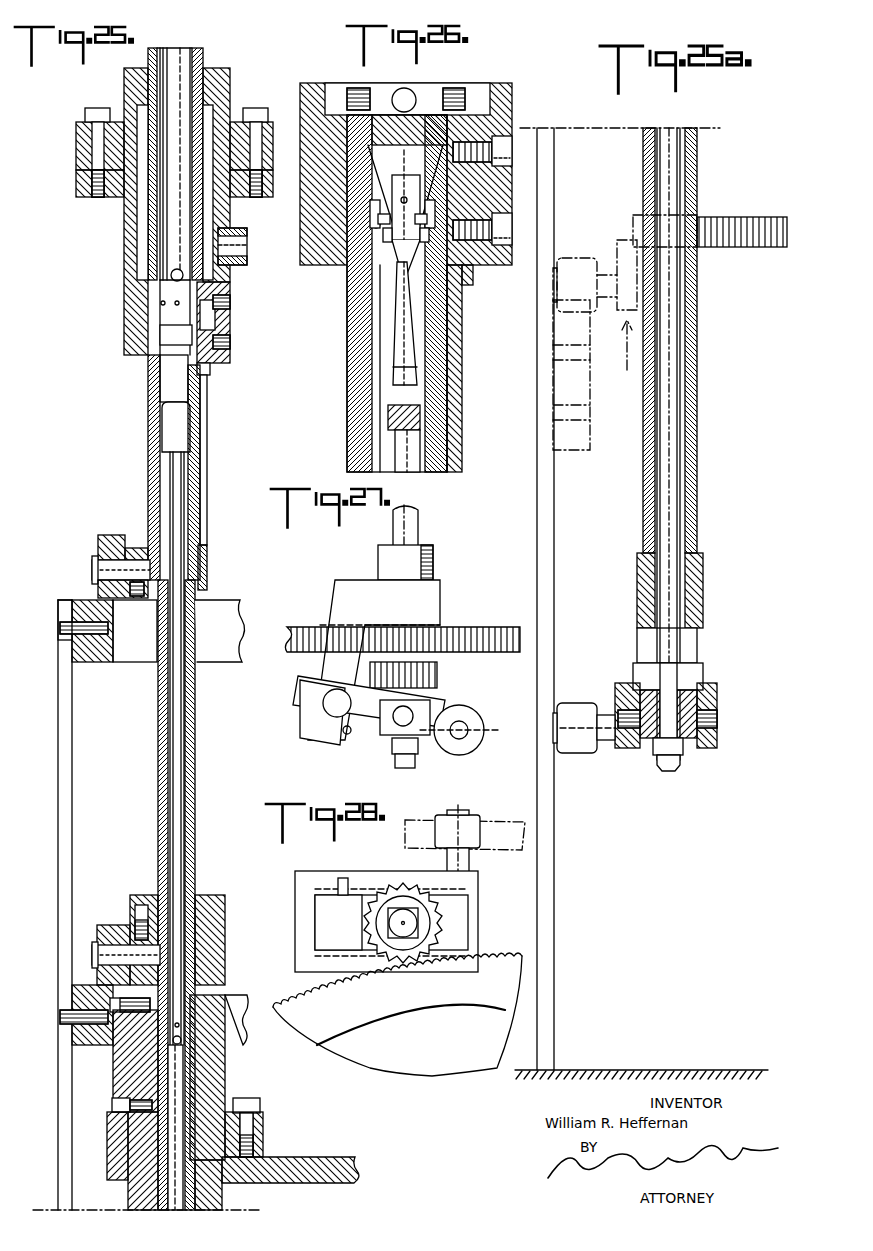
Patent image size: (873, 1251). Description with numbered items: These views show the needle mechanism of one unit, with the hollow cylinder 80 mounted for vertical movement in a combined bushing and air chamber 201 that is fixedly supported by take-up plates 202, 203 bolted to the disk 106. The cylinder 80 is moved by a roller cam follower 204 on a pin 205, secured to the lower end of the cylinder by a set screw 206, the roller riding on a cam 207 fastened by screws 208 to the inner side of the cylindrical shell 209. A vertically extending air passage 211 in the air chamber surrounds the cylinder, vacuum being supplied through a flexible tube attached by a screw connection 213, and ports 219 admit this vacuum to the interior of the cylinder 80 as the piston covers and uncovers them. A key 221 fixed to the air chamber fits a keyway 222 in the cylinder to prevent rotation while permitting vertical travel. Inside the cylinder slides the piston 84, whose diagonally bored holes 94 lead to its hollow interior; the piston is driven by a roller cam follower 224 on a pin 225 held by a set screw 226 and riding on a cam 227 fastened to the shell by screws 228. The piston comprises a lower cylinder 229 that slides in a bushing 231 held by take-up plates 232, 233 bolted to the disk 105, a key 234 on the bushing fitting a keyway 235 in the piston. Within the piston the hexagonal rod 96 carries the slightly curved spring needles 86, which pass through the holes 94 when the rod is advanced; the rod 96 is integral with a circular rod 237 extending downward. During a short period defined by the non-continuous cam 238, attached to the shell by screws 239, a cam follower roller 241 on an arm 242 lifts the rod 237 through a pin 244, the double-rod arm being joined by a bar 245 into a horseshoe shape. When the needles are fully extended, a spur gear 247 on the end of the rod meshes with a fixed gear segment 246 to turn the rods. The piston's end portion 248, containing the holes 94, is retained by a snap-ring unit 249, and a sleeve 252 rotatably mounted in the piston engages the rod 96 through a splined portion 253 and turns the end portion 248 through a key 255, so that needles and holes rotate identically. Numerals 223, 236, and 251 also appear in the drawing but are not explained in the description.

In FIG. 25, the hollow cylinder 80 is at (205, 56).
In FIG. 25, the piston 84 is at (171, 372).
In FIG. 26, the piston 84 is at (428, 119).
In FIG. 27, the piston 84 is at (385, 557).
In FIG. 26, the spring needles 86 is at (415, 382).
In FIG. 25, the diagonally bored holes 94 is at (160, 304).
In FIG. 26, the diagonally bored holes 94 is at (372, 168).
In FIG. 25, the non-circular rod 96 is at (176, 732).
In FIG. 26, the non-circular rod 96 is at (420, 465).
In FIG. 25, the disk 105 is at (330, 1160).
In FIG. 25, the disk 106 is at (80, 180).
In FIG. 25, the combined bushing and air chamber 201 is at (230, 74).
In FIG. 25, the take-up plate 202 is at (76, 133).
In FIG. 25, the take-up plate 203 is at (90, 145).
In FIG. 25, the roller cam follower 204 is at (110, 536).
In FIG. 25, the pin 205 is at (100, 568).
In FIG. 25, the set screw 206 is at (140, 596).
In FIG. 25, the cam 207 is at (100, 660).
In FIG. 25, the screws 208 is at (80, 613).
In FIG. 25, the cylindrical shell 209 is at (66, 720).
In FIG. 25A, the cylindrical shell 209 is at (546, 498).
In FIG. 25, the air passage 211 is at (142, 200).
In FIG. 25, the screw connection 213 is at (240, 248).
In FIG. 25, the ports 219 is at (158, 273).
In FIG. 25, the key 221 is at (210, 370).
In FIG. 25, the keyway 222 is at (207, 422).
In FIG. 25, the block 223 is at (222, 296).
In FIG. 25, the roller cam follower 224 is at (97, 924).
In FIG. 25, the pin 225 is at (98, 954).
In FIG. 25, the set screw 226 is at (141, 912).
In FIG. 25, the cam 227 is at (96, 1040).
In FIG. 25, the screws 228 is at (84, 998).
In FIG. 25, the lower cylinder 229 is at (204, 934).
In FIG. 25A, the lower cylinder 229 is at (690, 418).
In FIG. 25, the bushing 231 is at (210, 1078).
In FIG. 25, the take-up plate 232 is at (262, 1120).
In FIG. 25, the take-up plate 233 is at (263, 1140).
In FIG. 25, the key 234 is at (115, 1098).
In FIG. 25, the keyway 235 is at (150, 1130).
In FIG. 25, the screw 236 is at (148, 1012).
In FIG. 25, the circular rod 237 is at (183, 1096).
In FIG. 27, the circular rod 237 is at (418, 520).
In FIG. 25A, the circular rod 237 is at (670, 158).
In FIG. 28, the non-continuous cam 238 is at (490, 845).
In FIG. 25A, the non-continuous cam 238 is at (585, 374).
In FIG. 26, the screws 239 is at (532, 350).
In FIG. 27, the cam follower roller 241 is at (476, 720).
In FIG. 28, the cam follower roller 241 is at (466, 818).
In FIG. 25A, the cam follower roller 241 is at (590, 250).
In FIG. 27, the arm 242 is at (367, 740).
In FIG. 28, the arm 242 is at (330, 886).
In FIG. 27, the pin 244 is at (400, 746).
In FIG. 28, the pin 244 is at (403, 896).
In FIG. 25A, the pin 244 is at (620, 745).
In FIG. 25, the bar 245 is at (268, 914).
In FIG. 28, the bar 245 is at (297, 910).
In FIG. 27, the gear segment 246 is at (508, 632).
In FIG. 28, the gear segment 246 is at (443, 1000).
In FIG. 25A, the gear segment 246 is at (746, 214).
In FIG. 27, the spur gear 247 is at (438, 676).
In FIG. 28, the spur gear 247 is at (440, 928).
In FIG. 25A, the spur gear 247 is at (633, 225).
In FIG. 26, the end portion 248 is at (380, 119).
In FIG. 26, the snap-ring unit 249 is at (374, 205).
In FIG. 27, the snap-ring unit 249 is at (343, 604).
In FIG. 26, the pin 251 is at (375, 225).
In FIG. 26, the sleeve 252 is at (360, 372).
In FIG. 26, the splined portion 253 is at (424, 443).
In FIG. 26, the key 255 is at (386, 240).